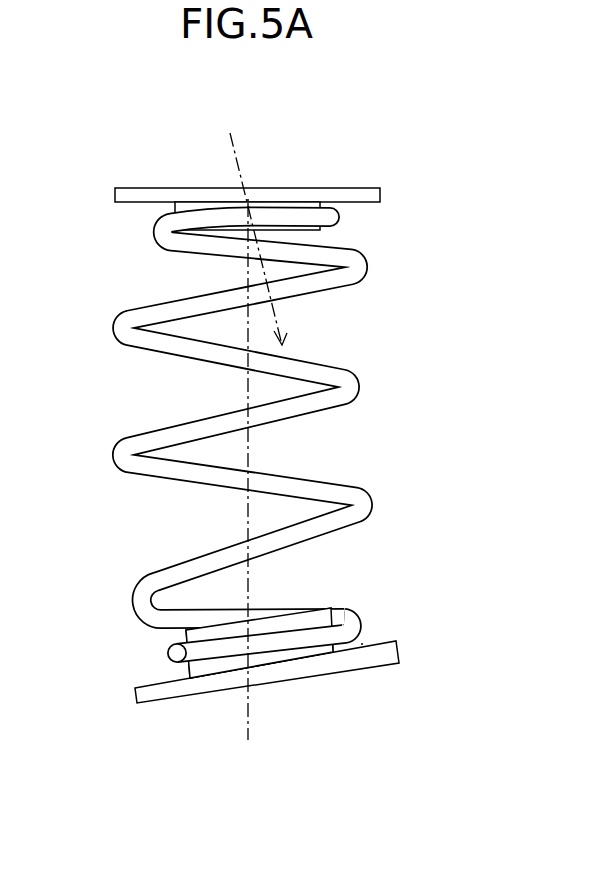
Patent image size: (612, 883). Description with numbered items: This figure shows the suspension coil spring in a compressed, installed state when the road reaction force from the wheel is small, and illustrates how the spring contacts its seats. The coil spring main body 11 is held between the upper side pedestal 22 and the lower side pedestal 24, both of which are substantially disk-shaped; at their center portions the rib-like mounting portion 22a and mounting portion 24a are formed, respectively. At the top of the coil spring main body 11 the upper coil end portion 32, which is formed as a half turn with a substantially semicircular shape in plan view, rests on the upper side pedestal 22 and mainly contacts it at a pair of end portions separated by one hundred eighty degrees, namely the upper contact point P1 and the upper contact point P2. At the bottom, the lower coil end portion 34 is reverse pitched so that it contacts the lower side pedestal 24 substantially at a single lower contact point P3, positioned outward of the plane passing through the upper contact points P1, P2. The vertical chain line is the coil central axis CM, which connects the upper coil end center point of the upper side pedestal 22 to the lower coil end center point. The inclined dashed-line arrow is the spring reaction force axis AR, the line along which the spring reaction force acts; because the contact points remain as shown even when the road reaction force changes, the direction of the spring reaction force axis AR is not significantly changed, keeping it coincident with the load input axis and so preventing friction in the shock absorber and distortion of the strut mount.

The coil spring main body 11 is at (236, 448).
The upper side pedestal 22 is at (150, 178).
The mounting portion 22a is at (173, 207).
The lower side pedestal 24 is at (281, 694).
The mounting portion 24a is at (208, 674).
The upper coil end portion 32 is at (331, 218).
The lower coil end portion 34 is at (177, 652).
The coil central axis CM is at (245, 396).
The spring reaction force axis AR is at (273, 310).
The upper contact point P1 is at (270, 154).
The upper contact point P2 is at (254, 190).
The lower contact point P3 is at (369, 635).